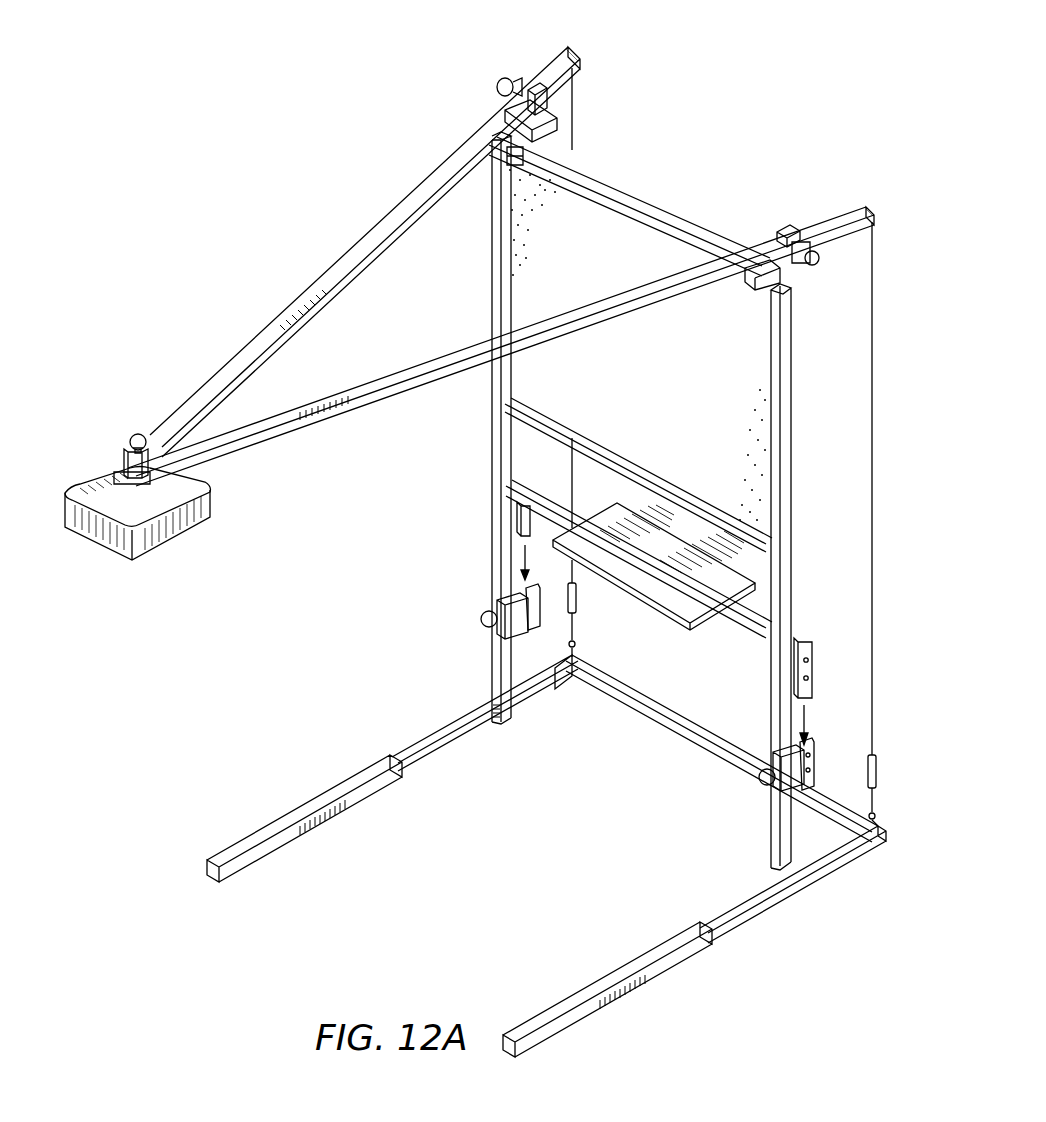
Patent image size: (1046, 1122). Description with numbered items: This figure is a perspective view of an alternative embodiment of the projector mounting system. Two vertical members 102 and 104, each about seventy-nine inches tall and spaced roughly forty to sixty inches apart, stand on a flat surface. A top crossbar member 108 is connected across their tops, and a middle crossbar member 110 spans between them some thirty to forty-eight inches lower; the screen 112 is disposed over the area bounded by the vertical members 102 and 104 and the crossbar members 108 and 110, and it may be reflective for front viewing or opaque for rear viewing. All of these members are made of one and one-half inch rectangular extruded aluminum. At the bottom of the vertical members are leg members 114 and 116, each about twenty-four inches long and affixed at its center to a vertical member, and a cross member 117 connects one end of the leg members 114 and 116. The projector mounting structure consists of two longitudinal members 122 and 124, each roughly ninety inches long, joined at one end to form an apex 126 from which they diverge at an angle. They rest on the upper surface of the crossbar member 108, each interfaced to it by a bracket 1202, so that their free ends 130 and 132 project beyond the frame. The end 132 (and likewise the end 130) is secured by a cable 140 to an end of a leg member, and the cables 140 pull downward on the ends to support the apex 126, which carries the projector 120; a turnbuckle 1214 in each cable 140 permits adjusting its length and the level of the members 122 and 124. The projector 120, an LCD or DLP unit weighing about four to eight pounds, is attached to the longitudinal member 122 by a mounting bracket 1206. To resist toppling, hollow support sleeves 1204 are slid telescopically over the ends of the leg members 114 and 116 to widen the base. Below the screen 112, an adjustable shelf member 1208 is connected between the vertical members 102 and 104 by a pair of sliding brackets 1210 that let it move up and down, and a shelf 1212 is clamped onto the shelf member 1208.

The first vertical member 102 is at (792, 385).
The second vertical member 104 is at (492, 440).
The top crossbar member 108 is at (640, 200).
The middle crossbar member 110 is at (645, 475).
The screen 112 is at (633, 394).
The leg member 114 is at (760, 906).
The leg member 116 is at (438, 738).
The cross member 117 is at (613, 705).
The projector 120 is at (185, 522).
The longitudinal member 122 is at (362, 242).
The longitudinal member 124 is at (430, 364).
The apex 126 is at (130, 460).
The end of longitudinal member 122 130 is at (578, 47).
The end of longitudinal member 124 132 is at (876, 205).
The cable 140 is at (575, 112).
The bracket 1202 is at (485, 76).
The support sleeve 1204 is at (299, 806).
The mounting bracket 1206 is at (132, 420).
The adjustable shelf member 1208 is at (760, 638).
The sliding bracket 1210 is at (465, 600).
The shelf 1212 is at (673, 618).
The turnbuckle 1214 is at (578, 600).